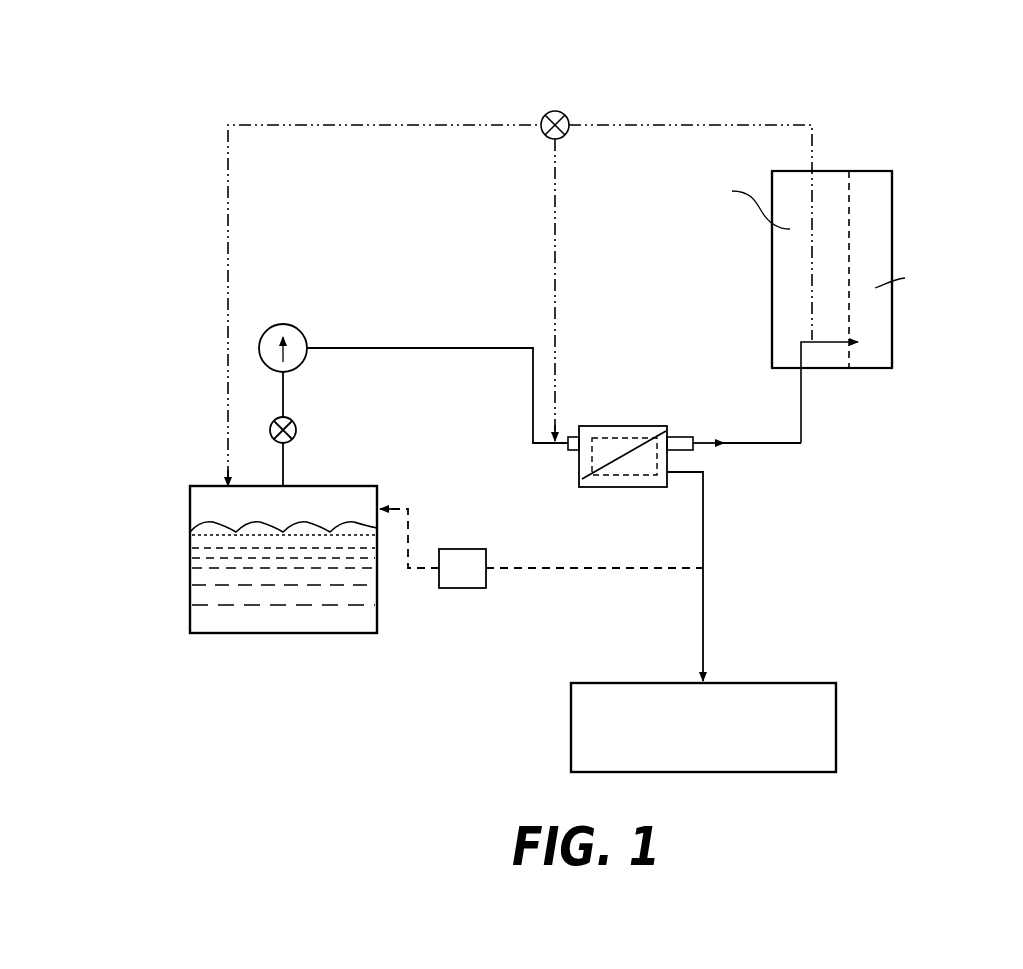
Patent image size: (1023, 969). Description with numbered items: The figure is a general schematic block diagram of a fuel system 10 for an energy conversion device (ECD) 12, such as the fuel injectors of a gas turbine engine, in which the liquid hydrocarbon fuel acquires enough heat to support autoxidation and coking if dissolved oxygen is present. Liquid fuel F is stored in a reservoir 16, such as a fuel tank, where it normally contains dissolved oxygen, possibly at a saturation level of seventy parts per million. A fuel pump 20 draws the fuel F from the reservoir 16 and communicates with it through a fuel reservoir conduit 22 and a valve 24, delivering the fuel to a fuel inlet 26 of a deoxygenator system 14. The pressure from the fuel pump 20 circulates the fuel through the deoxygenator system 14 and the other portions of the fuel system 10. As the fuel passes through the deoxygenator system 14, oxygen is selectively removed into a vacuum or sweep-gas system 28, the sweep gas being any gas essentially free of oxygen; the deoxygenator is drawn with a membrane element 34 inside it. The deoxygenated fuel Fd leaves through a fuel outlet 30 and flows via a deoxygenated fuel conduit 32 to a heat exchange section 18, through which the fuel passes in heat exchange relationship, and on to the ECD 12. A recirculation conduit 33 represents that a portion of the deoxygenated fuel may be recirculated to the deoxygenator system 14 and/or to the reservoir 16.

The fuel system 10 is at (880, 152).
The energy conversion device (ECD) 12 is at (870, 184).
The deoxygenator system 14 is at (650, 390).
The reservoir 16 is at (210, 630).
The heat exchange section 18 is at (782, 297).
The fuel pump 20 is at (283, 324).
The fuel reservoir conduit 22 is at (283, 397).
The valve 24 is at (297, 430).
The fuel inlet 26 is at (575, 449).
The vacuum or sweep-gas system 28 is at (760, 534).
The fuel outlet 30 is at (676, 432).
The deoxygenated fuel conduit 32 is at (802, 430).
The recirculation conduit 33 is at (660, 112).
The oxygen permeable membrane 34 is at (610, 432).